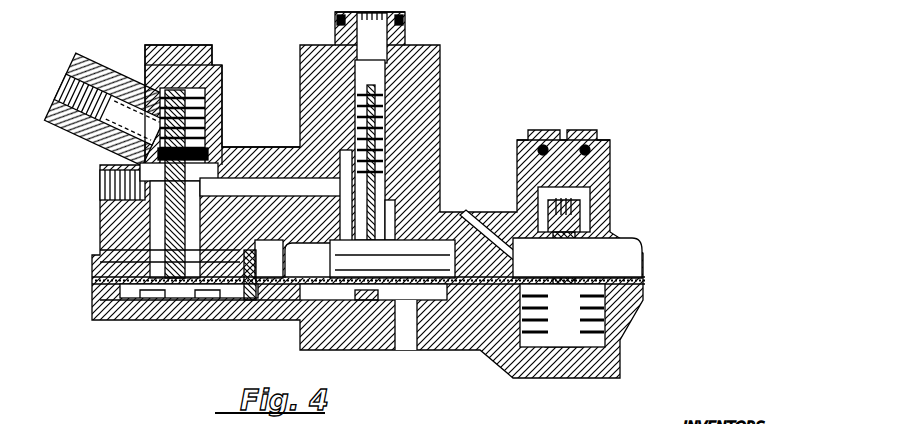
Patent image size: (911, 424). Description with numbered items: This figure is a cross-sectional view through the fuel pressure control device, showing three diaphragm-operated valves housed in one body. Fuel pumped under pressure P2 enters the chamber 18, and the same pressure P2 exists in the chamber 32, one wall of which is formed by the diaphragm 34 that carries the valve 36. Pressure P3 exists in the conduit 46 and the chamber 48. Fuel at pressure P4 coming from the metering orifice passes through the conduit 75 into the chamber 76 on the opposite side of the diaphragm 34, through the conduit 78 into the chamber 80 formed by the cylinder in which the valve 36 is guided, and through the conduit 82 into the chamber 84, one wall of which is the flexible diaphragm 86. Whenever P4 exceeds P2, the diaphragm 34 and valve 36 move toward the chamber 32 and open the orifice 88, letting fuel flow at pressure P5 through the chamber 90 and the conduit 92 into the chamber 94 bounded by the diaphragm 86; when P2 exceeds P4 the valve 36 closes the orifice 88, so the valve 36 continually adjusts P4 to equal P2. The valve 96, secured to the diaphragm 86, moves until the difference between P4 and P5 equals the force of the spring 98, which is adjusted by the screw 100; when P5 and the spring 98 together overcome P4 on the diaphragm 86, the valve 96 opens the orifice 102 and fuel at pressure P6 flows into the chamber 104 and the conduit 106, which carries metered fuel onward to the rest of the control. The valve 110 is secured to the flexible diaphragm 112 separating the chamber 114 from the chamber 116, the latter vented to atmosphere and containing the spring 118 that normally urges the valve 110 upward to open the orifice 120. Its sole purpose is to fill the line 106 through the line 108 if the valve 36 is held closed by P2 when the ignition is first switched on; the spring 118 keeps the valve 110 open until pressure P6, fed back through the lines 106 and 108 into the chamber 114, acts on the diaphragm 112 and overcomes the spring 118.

The chamber 18 is at (410, 340).
The chamber 32 is at (450, 300).
The diaphragm 34 is at (333, 286).
The valve 36 is at (345, 189).
The conduit 46 is at (600, 193).
The chamber 48 is at (597, 185).
The conduit 75 is at (440, 142).
The chamber 76 is at (445, 258).
The conduit 78 is at (442, 110).
The chamber 80 is at (440, 80).
The conduit 82 is at (238, 296).
The chamber 84 is at (137, 291).
The flexible diaphragm 86 is at (130, 290).
The orifice 88 is at (337, 240).
The chamber 90 is at (425, 213).
The conduit 92 is at (247, 180).
The chamber 94 is at (130, 257).
The valve 96 is at (167, 228).
The spring 98 is at (205, 118).
The screw 100 is at (188, 46).
The orifice 102 is at (140, 220).
The chamber 104 is at (208, 136).
The conduit 106 is at (128, 78).
The line 108 is at (505, 212).
The valve 110 is at (612, 235).
The flexible diaphragm 112 is at (645, 295).
The chamber 114 is at (650, 263).
The chamber 116 is at (628, 304).
The spring 118 is at (612, 328).
The orifice 120 is at (612, 216).
The pump pressure P2 is at (297, 293).
The pressure P3 is at (602, 188).
The metered fuel pressure P4 is at (387, 83).
The pressure P5 is at (410, 190).
The outlet pressure P6 is at (105, 123).